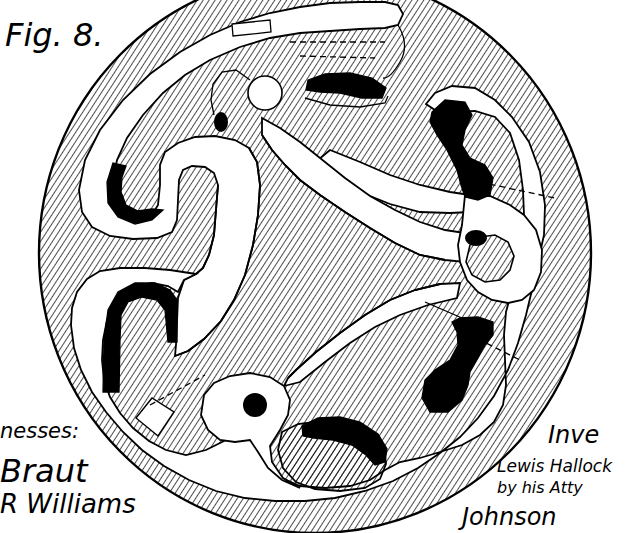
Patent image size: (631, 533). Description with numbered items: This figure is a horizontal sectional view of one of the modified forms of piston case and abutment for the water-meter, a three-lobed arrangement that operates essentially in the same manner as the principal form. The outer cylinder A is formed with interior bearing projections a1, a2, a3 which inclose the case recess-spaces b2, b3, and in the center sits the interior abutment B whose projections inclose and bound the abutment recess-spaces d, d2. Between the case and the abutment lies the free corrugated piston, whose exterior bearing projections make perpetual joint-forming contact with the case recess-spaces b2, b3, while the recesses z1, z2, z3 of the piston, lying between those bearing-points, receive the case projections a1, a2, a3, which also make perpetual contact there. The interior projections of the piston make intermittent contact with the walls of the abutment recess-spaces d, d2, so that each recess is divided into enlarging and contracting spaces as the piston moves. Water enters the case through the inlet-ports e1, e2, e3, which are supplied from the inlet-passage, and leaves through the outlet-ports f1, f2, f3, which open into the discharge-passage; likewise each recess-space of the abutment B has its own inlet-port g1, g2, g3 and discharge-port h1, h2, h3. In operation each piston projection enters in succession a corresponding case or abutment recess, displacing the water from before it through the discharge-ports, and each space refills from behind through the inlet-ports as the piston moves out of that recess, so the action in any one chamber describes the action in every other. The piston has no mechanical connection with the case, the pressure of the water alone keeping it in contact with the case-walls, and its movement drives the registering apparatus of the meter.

The cylinder A is at (317, 266).
The interior abutment B is at (353, 256).
The recess-space b3 is at (241, 179).
The recess-space b2 is at (308, 293).
The recess z3 is at (217, 252).
The recess z1 is at (404, 184).
The recess z2 is at (436, 313).
The recess-space d is at (363, 190).
The recess-space d2 is at (372, 334).
The inlet-port e3 is at (125, 190).
The inlet-port e1 is at (461, 143).
The inlet-port e2 is at (344, 441).
The outlet-port f1 is at (457, 361).
The outlet-port f2 is at (128, 337).
The outlet-port f3 is at (346, 85).
The inlet-port g1 is at (477, 256).
The inlet-port g2 is at (250, 430).
The inlet-port g3 is at (221, 122).
The discharge-port h1 is at (500, 249).
The discharge-port h2 is at (155, 417).
The discharge-port h3 is at (308, 70).
The bearing projection a1 is at (385, 142).
The bearing projection a2 is at (332, 426).
The bearing projection a3 is at (193, 220).